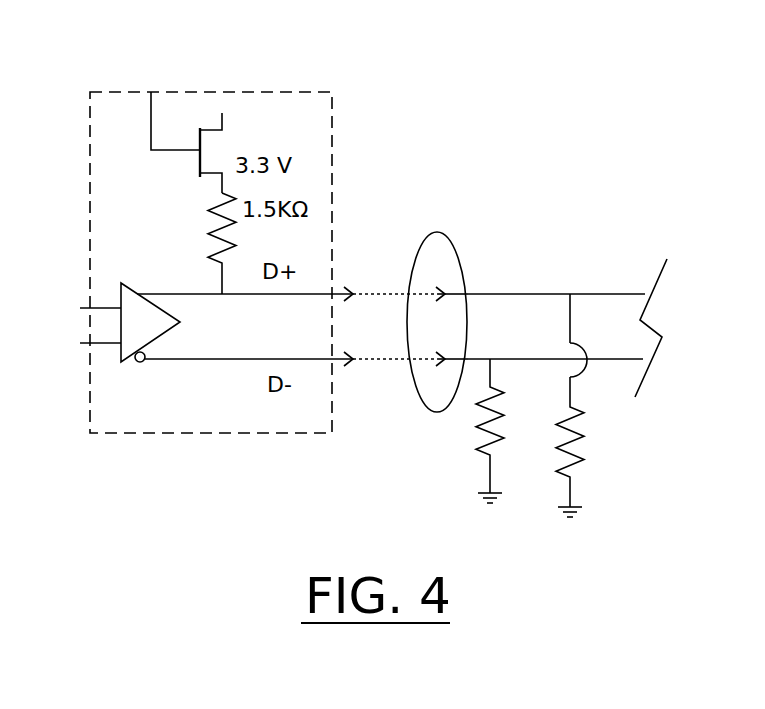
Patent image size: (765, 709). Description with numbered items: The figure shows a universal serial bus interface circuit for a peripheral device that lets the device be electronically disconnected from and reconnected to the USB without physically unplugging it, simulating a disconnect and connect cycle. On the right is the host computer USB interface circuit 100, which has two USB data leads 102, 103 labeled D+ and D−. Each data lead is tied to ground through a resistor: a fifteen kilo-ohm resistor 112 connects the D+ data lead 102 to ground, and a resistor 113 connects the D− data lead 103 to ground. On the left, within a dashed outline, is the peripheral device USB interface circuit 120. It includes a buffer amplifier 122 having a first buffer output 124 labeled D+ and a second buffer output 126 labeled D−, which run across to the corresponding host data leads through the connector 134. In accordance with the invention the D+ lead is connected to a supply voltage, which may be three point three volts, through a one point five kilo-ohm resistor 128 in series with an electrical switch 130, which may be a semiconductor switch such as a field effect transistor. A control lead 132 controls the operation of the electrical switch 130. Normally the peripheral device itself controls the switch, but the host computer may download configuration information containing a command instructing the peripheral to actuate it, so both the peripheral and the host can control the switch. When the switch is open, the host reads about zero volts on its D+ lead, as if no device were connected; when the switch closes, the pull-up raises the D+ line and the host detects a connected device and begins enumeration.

The host computer USB interface circuit 100 is at (550, 183).
The USB data lead 102 is at (548, 294).
The USB data lead 103 is at (475, 359).
The 15 kΩ resistor 112 is at (583, 455).
The resistor 113 is at (482, 450).
The peripheral device USB interface circuit 120 is at (106, 90).
The buffer amplifier 122 is at (130, 322).
The first buffer output 124 is at (273, 294).
The second buffer output 126 is at (250, 359).
The 1.5 kΩ resistor 128 is at (212, 207).
The electrical switch 130 is at (222, 151).
The control lead 132 is at (150, 111).
The USB connector 134 is at (438, 232).